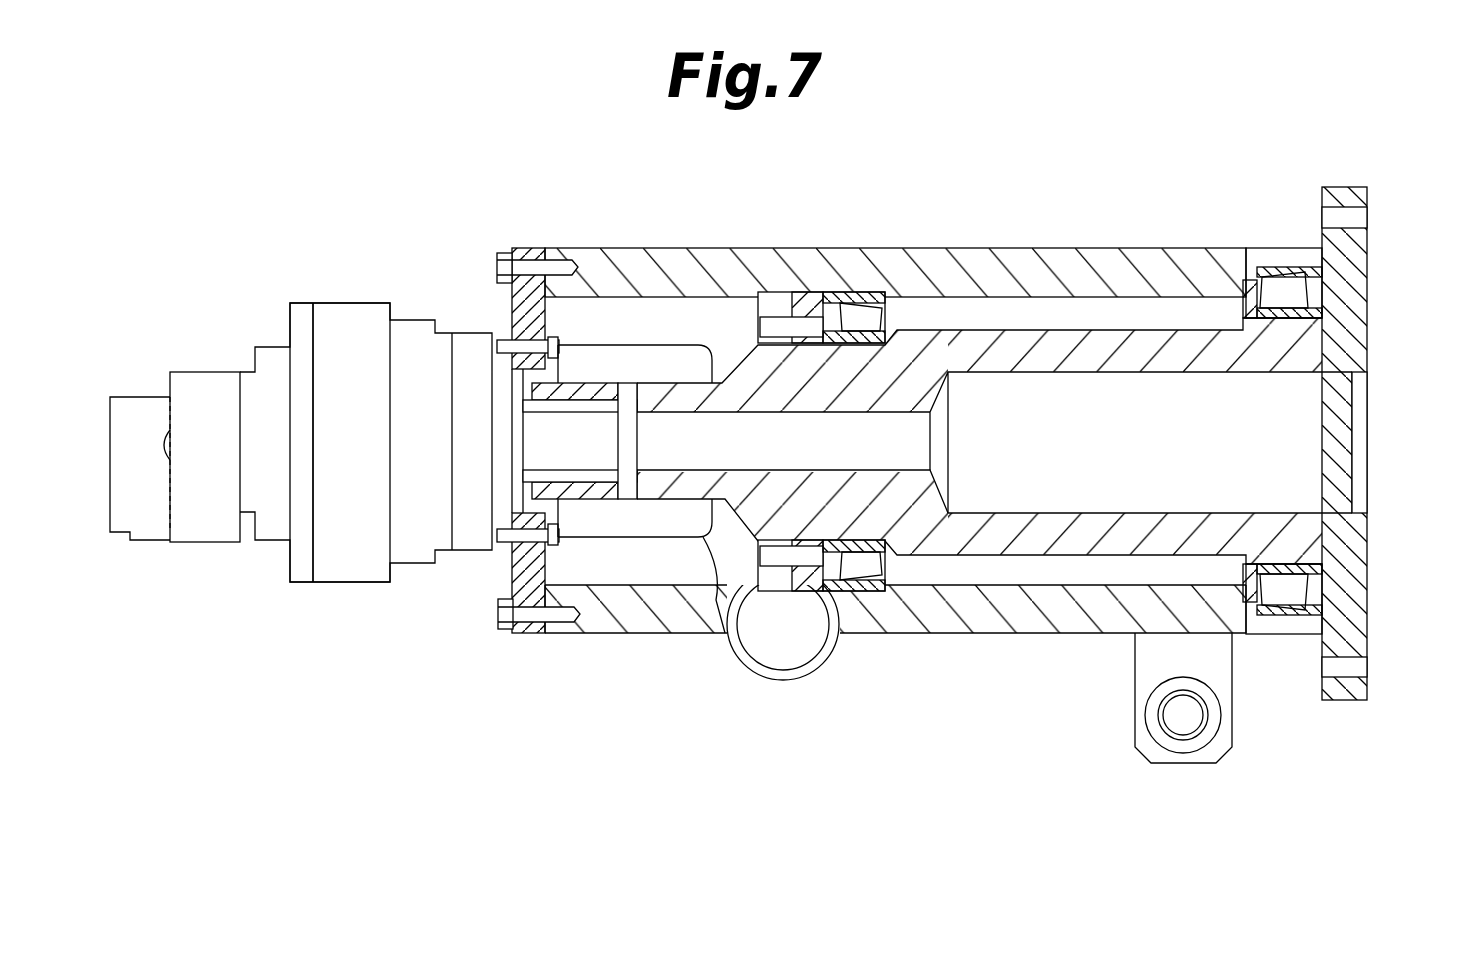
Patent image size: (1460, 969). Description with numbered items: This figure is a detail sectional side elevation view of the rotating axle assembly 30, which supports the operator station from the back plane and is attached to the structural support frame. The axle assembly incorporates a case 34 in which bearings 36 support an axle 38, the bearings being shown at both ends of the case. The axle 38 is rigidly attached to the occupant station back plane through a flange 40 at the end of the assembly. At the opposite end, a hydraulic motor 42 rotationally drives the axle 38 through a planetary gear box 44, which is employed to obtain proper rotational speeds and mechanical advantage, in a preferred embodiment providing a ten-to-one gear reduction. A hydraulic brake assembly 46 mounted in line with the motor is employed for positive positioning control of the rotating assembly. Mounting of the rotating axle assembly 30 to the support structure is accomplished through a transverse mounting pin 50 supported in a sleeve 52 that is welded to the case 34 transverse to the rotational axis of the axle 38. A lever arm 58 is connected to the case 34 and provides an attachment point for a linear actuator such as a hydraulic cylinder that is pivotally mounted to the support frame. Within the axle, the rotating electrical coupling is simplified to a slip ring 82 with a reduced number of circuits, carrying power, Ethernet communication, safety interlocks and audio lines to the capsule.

The axle assembly 30 is at (955, 202).
The case 34 is at (1038, 218).
The bearings 36 is at (857, 292).
The axle 38 is at (1100, 325).
The flange 40 is at (1372, 253).
The hydraulic motor 42 is at (207, 372).
The planetary gear box 44 is at (290, 582).
The hydraulic brake assembly 46 is at (137, 397).
The transverse mounting pin 50 is at (760, 665).
The sleeve 52 is at (832, 660).
The lever arm 58 is at (1138, 752).
The slip ring 82 is at (712, 595).